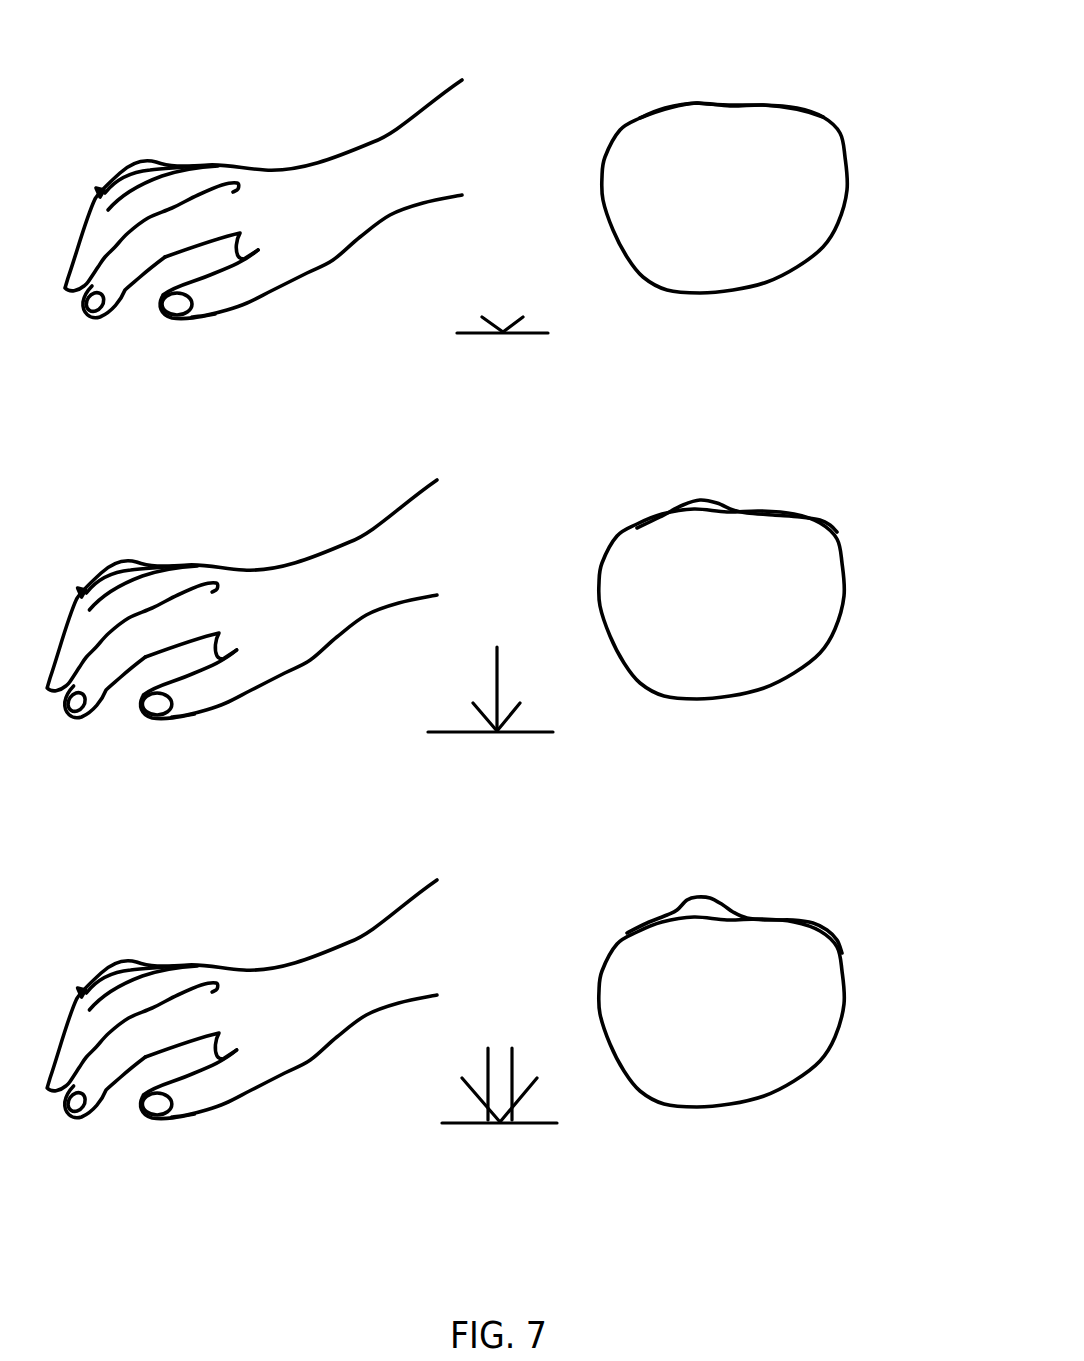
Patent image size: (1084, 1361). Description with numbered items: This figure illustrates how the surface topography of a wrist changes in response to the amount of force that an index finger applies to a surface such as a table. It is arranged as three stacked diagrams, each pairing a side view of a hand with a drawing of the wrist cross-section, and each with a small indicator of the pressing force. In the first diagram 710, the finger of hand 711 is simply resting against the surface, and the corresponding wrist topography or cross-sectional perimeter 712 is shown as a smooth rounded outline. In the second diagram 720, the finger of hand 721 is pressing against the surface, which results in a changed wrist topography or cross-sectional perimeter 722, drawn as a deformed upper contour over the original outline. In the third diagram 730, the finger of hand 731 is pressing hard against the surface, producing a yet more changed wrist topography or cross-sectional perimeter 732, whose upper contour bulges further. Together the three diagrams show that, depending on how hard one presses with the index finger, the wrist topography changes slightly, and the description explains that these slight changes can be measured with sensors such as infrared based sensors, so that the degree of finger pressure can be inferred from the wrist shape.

The hand 711 is at (246, 116).
The wrist topography or cross-sectional perimeter 712 is at (634, 96).
The diagram 710 is at (854, 335).
The hand 721 is at (264, 533).
The changed wrist topography or cross-sectional perimeter 722 is at (658, 476).
The diagram 720 is at (893, 665).
The hand 731 is at (264, 933).
The yet more changed wrist topography or cross-sectional perimeter 732 is at (654, 882).
The diagram 730 is at (882, 1101).